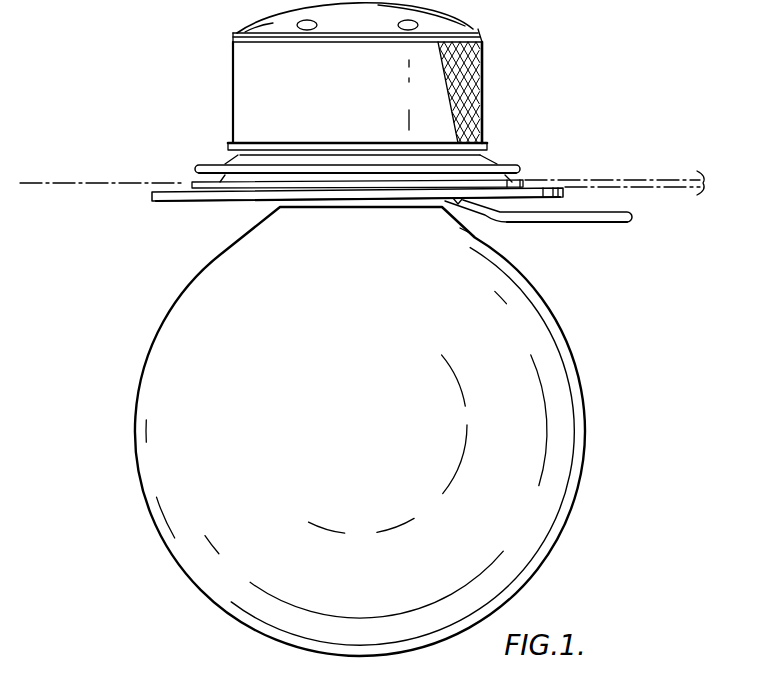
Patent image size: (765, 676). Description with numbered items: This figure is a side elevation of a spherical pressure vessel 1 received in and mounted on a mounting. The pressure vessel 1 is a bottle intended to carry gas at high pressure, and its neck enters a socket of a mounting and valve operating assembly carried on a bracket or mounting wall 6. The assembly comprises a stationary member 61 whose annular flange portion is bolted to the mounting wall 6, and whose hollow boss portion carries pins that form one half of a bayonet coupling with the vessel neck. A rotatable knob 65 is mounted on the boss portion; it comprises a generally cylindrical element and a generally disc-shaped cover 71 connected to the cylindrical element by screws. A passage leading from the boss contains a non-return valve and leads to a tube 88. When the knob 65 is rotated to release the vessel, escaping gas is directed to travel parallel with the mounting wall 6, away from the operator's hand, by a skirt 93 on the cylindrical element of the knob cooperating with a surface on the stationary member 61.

The spherical pressure vessel 1 is at (163, 327).
The mounting wall 6 is at (600, 180).
The stationary member 61 is at (158, 204).
The rotatable knob 65 is at (492, 92).
The disc-shaped cover 71 is at (233, 43).
The tube 88 is at (605, 222).
The skirt 93 is at (512, 160).